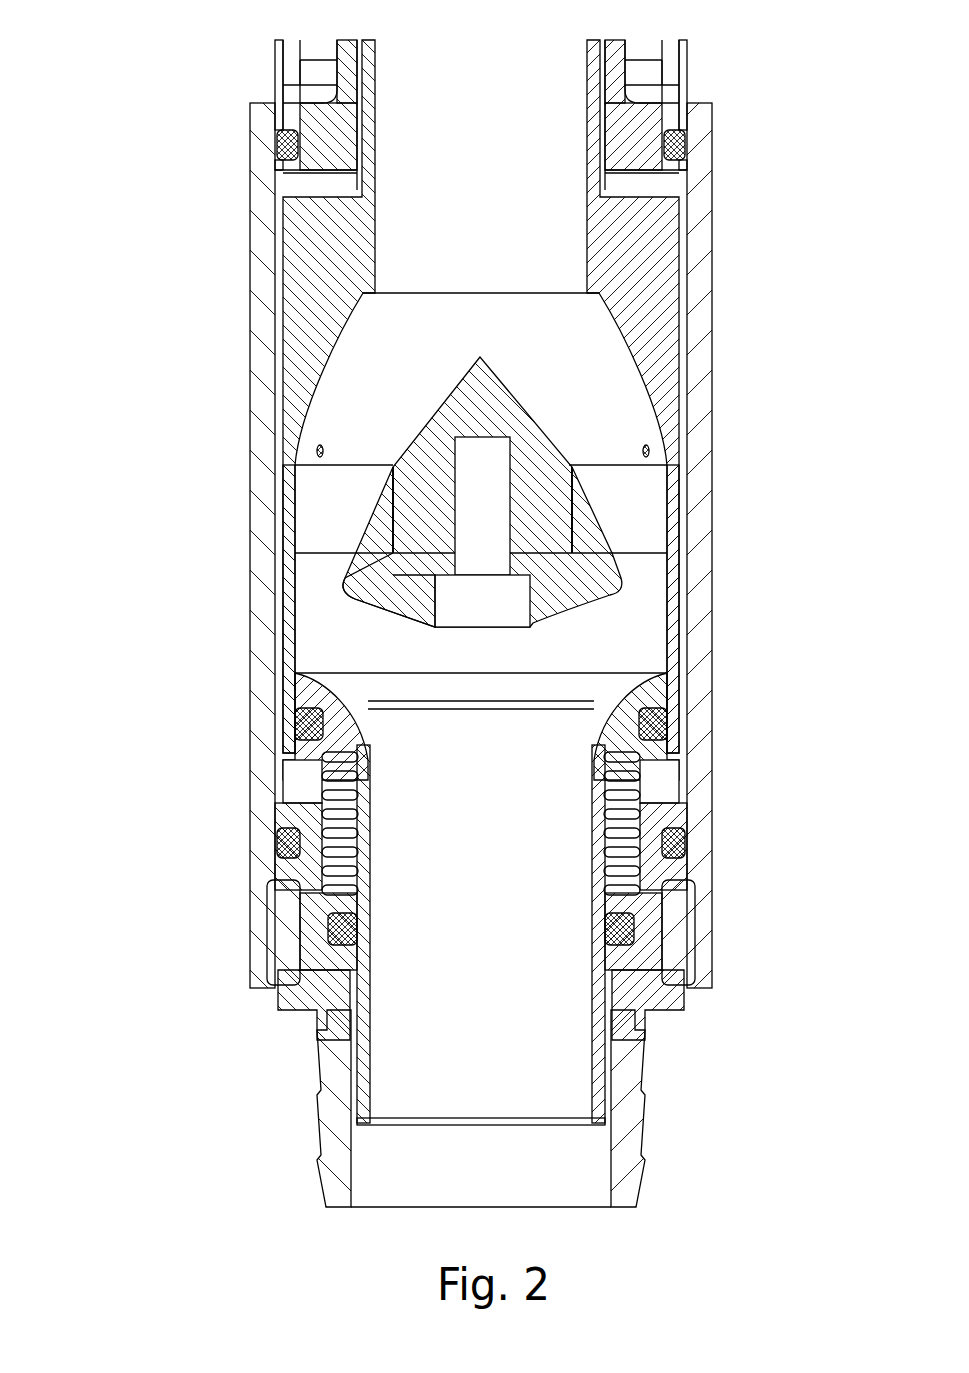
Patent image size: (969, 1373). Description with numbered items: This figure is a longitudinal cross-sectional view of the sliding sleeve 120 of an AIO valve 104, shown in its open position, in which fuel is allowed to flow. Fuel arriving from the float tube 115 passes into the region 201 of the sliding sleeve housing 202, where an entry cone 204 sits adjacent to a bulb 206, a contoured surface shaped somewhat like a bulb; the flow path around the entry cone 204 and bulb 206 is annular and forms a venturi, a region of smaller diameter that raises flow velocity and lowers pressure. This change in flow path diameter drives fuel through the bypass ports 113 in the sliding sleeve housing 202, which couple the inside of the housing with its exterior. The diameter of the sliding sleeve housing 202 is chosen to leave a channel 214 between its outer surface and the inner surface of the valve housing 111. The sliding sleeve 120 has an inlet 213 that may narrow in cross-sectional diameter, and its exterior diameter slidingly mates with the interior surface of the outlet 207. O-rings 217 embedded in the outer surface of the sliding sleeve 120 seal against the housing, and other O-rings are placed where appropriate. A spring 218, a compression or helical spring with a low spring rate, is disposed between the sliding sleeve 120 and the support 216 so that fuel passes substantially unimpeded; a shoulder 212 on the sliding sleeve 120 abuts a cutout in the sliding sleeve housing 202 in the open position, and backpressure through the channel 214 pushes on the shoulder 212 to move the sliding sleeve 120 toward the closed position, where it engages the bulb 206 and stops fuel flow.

The AIO valve 104 is at (106, 54).
The valve housing 111 is at (715, 630).
The bypass ports 113 is at (645, 447).
The float tube 115 is at (588, 117).
The sliding sleeve 120 is at (600, 745).
The upper chamber 201 is at (592, 289).
The sliding sleeve housing 202 is at (622, 338).
The entry cone 204 is at (455, 405).
The bulb 206 is at (398, 598).
The outlet 207 is at (630, 1070).
The shoulder 212 is at (663, 745).
The inlet 213 is at (494, 696).
The channel 214 is at (690, 480).
The support 216 is at (675, 815).
The O-rings 217 is at (672, 725).
The spring 218 is at (322, 788).